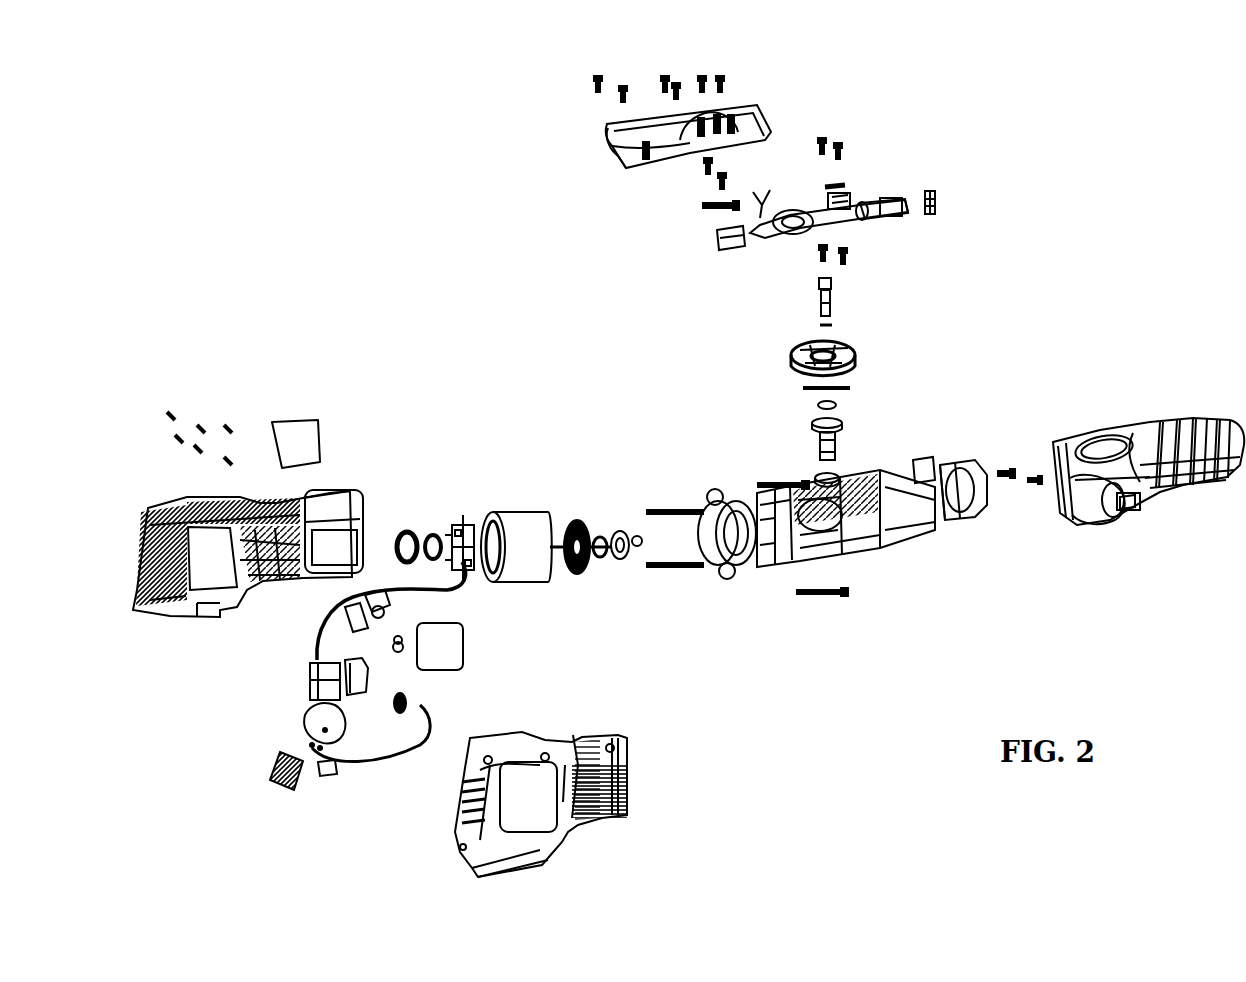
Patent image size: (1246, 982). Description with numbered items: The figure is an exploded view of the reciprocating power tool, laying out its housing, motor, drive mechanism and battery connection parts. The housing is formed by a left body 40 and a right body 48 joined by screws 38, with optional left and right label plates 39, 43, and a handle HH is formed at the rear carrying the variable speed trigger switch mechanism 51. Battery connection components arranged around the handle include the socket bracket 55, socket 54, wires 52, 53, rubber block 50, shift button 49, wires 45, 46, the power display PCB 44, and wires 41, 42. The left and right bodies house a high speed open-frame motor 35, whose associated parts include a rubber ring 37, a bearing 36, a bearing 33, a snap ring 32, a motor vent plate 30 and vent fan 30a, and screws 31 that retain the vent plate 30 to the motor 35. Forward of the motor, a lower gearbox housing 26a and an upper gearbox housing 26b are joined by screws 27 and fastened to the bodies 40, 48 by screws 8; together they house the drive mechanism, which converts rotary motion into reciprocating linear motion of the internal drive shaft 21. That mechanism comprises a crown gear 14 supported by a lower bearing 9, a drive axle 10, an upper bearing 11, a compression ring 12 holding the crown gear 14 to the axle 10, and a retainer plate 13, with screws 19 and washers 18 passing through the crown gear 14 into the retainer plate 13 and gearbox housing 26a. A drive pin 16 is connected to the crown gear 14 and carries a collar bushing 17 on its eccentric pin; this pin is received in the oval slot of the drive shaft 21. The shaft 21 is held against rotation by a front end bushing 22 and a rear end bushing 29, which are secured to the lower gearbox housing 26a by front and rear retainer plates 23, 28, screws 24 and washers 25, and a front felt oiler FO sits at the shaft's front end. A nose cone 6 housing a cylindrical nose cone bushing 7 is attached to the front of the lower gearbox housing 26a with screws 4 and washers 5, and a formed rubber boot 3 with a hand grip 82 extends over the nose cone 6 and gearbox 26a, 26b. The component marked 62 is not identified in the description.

The rubber boot 3 is at (1137, 432).
The screws 4 is at (1010, 470).
The washers 5 is at (585, 523).
The nose cone 6 is at (965, 468).
The nose cone bushing 7 is at (925, 458).
The screws 8 is at (777, 481).
The lower bearing 9 is at (840, 475).
The drive axle 10 is at (838, 444).
The upper bearing 11 is at (845, 421).
The compression ring 12 is at (838, 404).
The retainer plate 13 is at (852, 380).
The crown gear 14 is at (793, 367).
The drive pin 16 is at (820, 298).
The collar bushing 17 is at (834, 284).
The washers 18 is at (820, 268).
The screws 19 is at (848, 250).
The internal drive shaft 21 is at (893, 200).
The front end bushing 22 is at (850, 194).
The front retainer plate 23 is at (836, 182).
The screws 24 is at (828, 138).
The washers 25 is at (722, 193).
The lower gearbox housing 26a is at (867, 542).
The upper gearbox housing 26b is at (757, 104).
The screws 27 is at (662, 76).
The rear retainer plate 28 is at (697, 203).
The rear end bushing 29 is at (718, 244).
The motor vent plate 30 is at (718, 498).
The vent fan 30a is at (573, 510).
The screws 31 is at (670, 505).
The snap ring 32 is at (644, 541).
The bearing 33 is at (619, 562).
The motor 35 is at (512, 513).
The bearing 36 is at (433, 535).
The rubber ring 37 is at (405, 532).
The screws 38 is at (210, 395).
The left label plate 39 is at (296, 432).
The left body 40 is at (310, 500).
The wire 41 is at (381, 593).
The wire 42 is at (450, 600).
The right label plate 43 is at (465, 645).
The power display PCB 44 is at (404, 699).
The wire 45 is at (380, 742).
The wire 46 is at (428, 727).
The right body 48 is at (625, 778).
The shift button 49 is at (345, 615).
The rubber block 50 is at (350, 622).
The variable speed trigger switch mechanism 51 is at (312, 680).
The wire 52 is at (303, 727).
The wire 53 is at (343, 715).
The socket 54 is at (330, 775).
The socket bracket 55 is at (295, 810).
The washer 62 is at (807, 342).
The hand grip 82 is at (1140, 517).
The handle HH is at (150, 510).
The front felt oiler FO is at (938, 199).